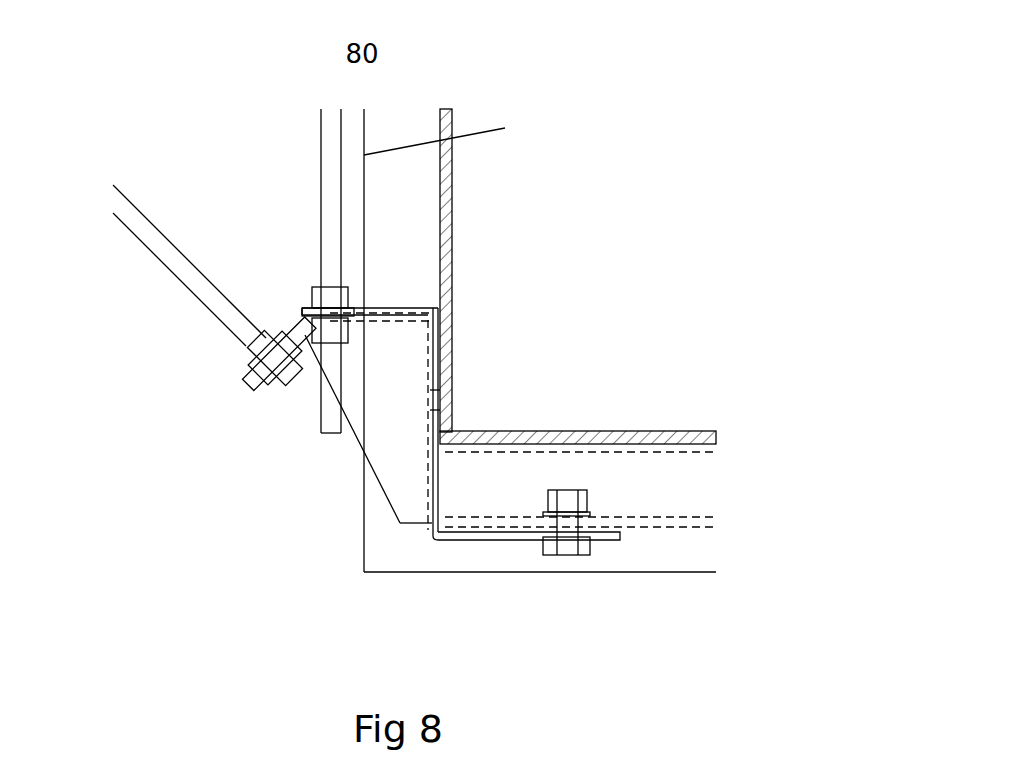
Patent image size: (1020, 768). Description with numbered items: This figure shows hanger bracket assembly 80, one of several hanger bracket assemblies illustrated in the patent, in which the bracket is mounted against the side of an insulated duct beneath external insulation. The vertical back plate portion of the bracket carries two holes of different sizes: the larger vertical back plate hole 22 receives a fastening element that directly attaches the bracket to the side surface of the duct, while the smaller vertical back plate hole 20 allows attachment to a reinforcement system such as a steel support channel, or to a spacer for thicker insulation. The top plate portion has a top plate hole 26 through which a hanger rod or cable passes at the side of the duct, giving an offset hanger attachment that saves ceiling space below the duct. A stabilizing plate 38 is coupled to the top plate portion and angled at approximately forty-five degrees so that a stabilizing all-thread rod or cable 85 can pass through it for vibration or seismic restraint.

The assembly 80 is at (518, 340).
The stabilizing rod or cable 85 is at (228, 330).
The stabilizing plate 38 is at (250, 385).
The top plate hole 26 is at (388, 310).
The vertical back plate hole 22 is at (430, 393).
The vertical back plate hole 20 is at (430, 465).